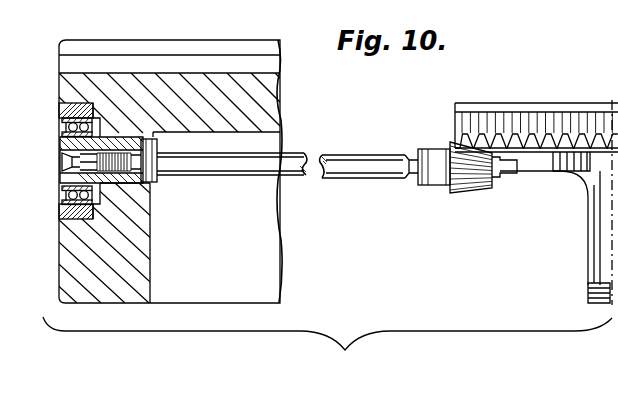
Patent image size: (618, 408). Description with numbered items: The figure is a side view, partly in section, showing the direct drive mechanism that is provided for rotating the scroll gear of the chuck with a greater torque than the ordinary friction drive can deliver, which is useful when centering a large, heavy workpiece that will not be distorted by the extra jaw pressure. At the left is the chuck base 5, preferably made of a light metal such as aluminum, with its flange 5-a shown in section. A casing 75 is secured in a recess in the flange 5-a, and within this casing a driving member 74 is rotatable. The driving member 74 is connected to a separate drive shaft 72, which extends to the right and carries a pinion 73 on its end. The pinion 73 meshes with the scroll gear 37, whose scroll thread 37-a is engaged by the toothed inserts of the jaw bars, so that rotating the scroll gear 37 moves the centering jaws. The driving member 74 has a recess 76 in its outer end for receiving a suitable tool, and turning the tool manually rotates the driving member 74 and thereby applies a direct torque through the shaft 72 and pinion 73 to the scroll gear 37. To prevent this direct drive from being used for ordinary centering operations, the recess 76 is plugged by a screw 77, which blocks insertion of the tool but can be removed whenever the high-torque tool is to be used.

The base 5 is at (62, 88).
The flange 5-a is at (62, 256).
The casing 75 is at (60, 211).
The recess 76 is at (62, 153).
The screw 77 is at (68, 171).
The driving member 74 is at (155, 183).
The drive shaft 72 is at (367, 163).
The pinion 73 is at (458, 193).
The scroll gear 37 is at (517, 108).
The scroll thread 37-a is at (573, 108).